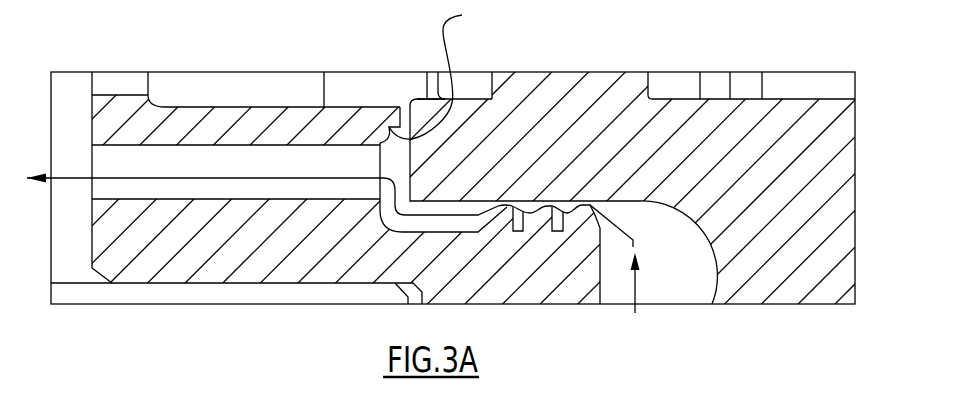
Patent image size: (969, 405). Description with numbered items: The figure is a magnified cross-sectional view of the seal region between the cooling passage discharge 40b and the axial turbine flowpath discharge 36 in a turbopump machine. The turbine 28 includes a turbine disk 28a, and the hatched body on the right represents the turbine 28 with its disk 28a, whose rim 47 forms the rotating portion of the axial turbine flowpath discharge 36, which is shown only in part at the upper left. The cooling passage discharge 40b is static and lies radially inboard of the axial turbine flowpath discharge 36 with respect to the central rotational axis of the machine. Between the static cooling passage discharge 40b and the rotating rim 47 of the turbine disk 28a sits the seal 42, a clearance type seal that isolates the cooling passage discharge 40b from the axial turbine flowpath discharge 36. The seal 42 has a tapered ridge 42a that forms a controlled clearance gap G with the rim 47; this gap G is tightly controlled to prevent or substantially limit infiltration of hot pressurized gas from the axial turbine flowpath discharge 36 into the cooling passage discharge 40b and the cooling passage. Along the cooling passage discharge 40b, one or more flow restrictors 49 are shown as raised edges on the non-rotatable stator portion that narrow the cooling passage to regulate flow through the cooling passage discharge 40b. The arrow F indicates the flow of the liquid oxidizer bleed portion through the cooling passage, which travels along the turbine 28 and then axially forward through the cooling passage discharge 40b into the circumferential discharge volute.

The turbine 28 is at (867, 232).
The turbine disk 28a is at (712, 298).
The axial turbine flowpath discharge 36 is at (295, 82).
The cooling passage discharge 40b is at (208, 298).
The seal 42 is at (384, 90).
The tapered ridge 42a is at (449, 70).
The rim 47 is at (617, 203).
The flow restrictors 49 is at (532, 198).
The clearance gap G is at (411, 88).
The flow through the cooling passage F is at (635, 288).